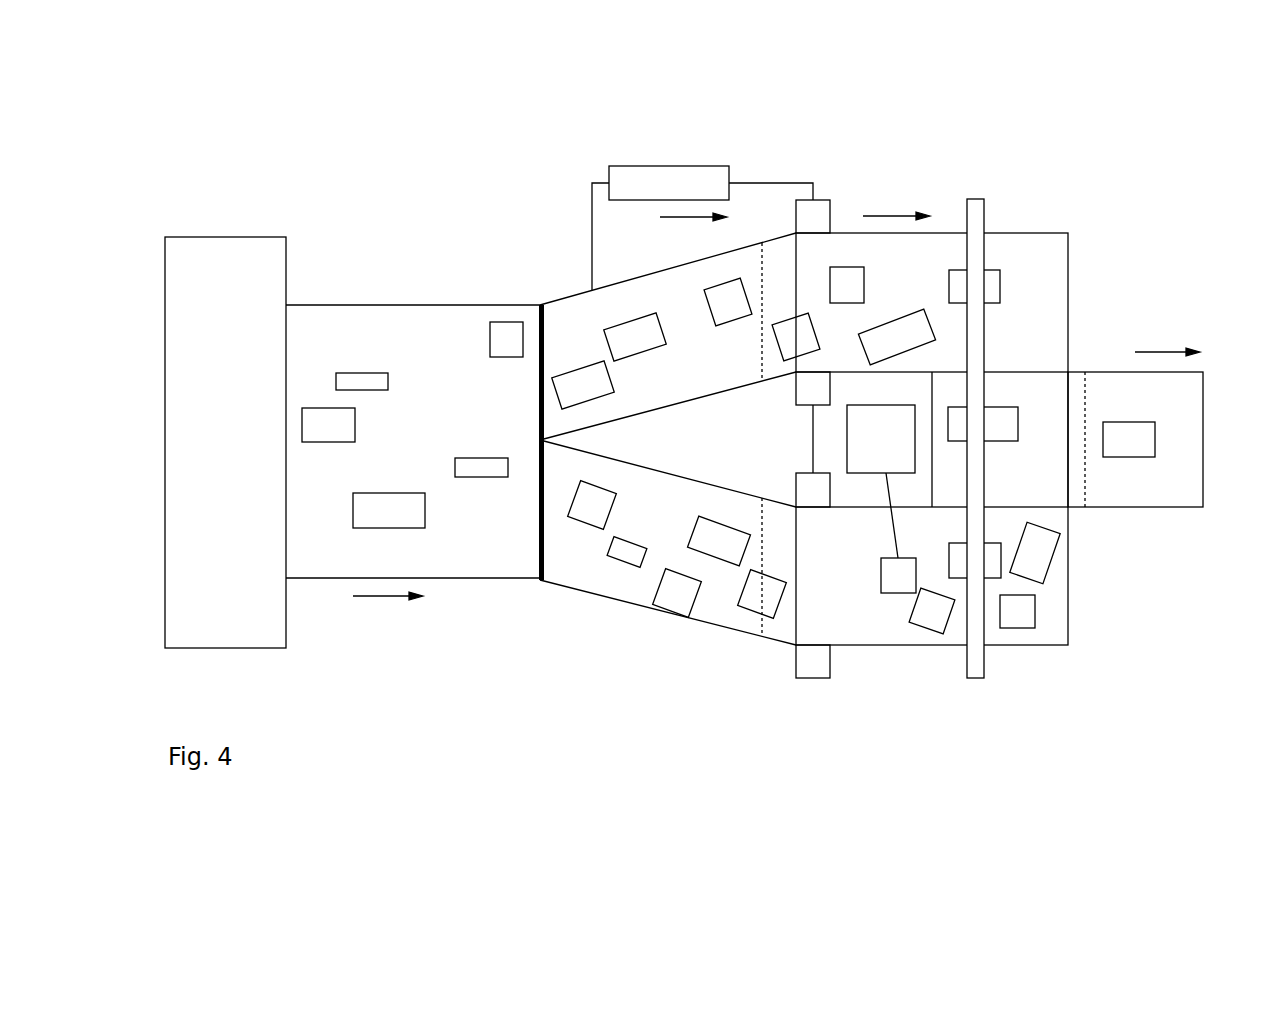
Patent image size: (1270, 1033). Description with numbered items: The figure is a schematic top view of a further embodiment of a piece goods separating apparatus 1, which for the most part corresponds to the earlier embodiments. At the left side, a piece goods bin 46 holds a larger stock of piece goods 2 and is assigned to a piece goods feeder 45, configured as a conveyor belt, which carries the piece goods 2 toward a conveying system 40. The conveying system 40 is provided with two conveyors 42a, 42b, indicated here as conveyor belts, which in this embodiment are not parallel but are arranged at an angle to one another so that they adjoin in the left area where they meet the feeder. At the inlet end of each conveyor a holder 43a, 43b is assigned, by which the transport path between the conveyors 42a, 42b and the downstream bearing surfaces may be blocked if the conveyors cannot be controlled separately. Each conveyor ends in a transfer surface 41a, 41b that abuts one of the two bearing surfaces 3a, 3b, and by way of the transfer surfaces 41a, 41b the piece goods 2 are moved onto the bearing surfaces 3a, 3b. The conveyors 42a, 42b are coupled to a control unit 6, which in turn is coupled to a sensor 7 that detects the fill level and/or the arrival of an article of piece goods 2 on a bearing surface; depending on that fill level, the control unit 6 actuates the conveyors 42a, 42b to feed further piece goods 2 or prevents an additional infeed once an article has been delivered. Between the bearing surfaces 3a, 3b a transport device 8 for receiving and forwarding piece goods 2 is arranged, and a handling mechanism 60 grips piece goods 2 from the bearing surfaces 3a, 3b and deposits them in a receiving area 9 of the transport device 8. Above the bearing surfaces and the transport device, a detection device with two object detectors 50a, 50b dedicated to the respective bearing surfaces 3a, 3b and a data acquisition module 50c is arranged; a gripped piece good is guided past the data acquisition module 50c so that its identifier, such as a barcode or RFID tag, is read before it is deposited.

The separating apparatus 1 is at (1129, 136).
The piece goods 2 is at (510, 340).
The bearing surface 3a is at (1050, 250).
The bearing surface 3b is at (1052, 628).
The control unit 6 is at (678, 180).
The sensor 7 is at (814, 215).
The transport device 8 is at (1186, 490).
The receiving area 9 is at (1050, 474).
The conveying system 40 is at (568, 642).
The transfer surface 41a is at (781, 245).
The transfer surface 41b is at (780, 628).
The conveyor 42a is at (721, 275).
The conveyor 42b is at (573, 563).
The holder 43a is at (547, 338).
The holder 43b is at (543, 518).
The piece goods feeder 45 is at (390, 338).
The piece goods bin 46 is at (252, 338).
The object detector 50a is at (987, 290).
The object detector 50b is at (990, 565).
The data acquisition module 50c is at (1002, 423).
The handling mechanism 60 is at (863, 439).